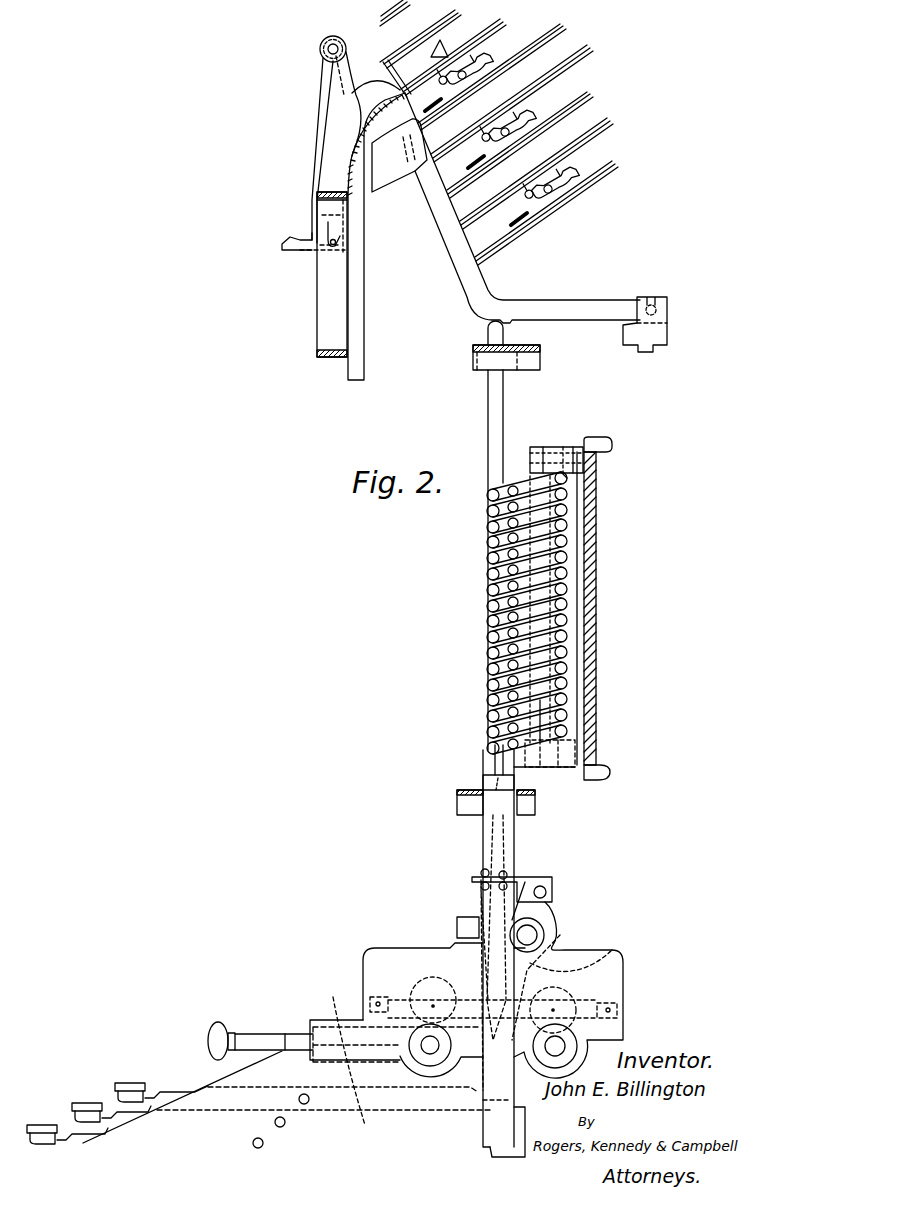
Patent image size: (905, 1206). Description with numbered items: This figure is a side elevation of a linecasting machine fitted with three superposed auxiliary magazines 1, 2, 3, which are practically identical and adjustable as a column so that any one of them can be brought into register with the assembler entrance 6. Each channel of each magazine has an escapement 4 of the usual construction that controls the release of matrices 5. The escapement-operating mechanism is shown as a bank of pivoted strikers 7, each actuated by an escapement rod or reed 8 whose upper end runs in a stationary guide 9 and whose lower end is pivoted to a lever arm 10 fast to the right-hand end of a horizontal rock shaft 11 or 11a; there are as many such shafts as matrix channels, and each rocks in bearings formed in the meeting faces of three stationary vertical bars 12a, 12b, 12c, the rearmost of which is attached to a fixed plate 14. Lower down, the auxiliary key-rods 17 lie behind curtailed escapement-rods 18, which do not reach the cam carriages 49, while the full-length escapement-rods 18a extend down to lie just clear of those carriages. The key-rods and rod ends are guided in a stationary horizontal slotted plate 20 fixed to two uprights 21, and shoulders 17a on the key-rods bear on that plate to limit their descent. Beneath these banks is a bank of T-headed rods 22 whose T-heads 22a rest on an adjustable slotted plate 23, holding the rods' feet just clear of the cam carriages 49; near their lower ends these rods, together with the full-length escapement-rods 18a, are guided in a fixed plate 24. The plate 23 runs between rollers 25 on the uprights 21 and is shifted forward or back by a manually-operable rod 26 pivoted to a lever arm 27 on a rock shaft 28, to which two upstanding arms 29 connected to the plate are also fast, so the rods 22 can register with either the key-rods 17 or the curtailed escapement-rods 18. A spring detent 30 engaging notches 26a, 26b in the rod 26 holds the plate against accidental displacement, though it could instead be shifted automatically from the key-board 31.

The auxiliary magazine 1 is at (475, 20).
The auxiliary magazine 2 is at (483, 74).
The auxiliary magazine 3 is at (512, 121).
The escapement 4 is at (470, 80).
The matrices 5 is at (413, 65).
The assembler entrance 6 is at (330, 142).
The pivoted strikers 7 is at (447, 235).
The escapement rod or reed 8 is at (492, 395).
The stationary guide 9 is at (477, 348).
The lever arm 10 is at (486, 526).
The horizontal rock shaft 11 is at (531, 466).
The horizontal rock shaft 11a is at (562, 480).
The stationary vertical bar 12a is at (536, 447).
The stationary vertical bar 12b is at (556, 447).
The stationary vertical bar 12c is at (574, 447).
The fixed plate 14 is at (597, 508).
The auxiliary key-rods 17 is at (514, 767).
The shoulders 17a is at (532, 795).
The curtailed escapement-rods 18 is at (484, 758).
The full-length escapement-rods 18a is at (478, 906).
The stationary horizontal slotted plate 20 is at (459, 794).
The uprights 21 is at (483, 780).
The T-headed rods 22 is at (480, 895).
The T-heads 22a is at (516, 876).
The adjustable slotted plate 23 is at (481, 880).
The fixed plate 24 is at (600, 960).
The rollers 25 is at (503, 872).
The manually-operable rod 26 is at (250, 1036).
The notch 26a is at (290, 1036).
The notch 26b is at (363, 1120).
The lever arm 27 is at (556, 952).
The rock shaft 28 is at (545, 926).
The upstanding arms 29 is at (548, 896).
The spring detent 30 is at (355, 1053).
The key-board 31 is at (168, 1099).
The cam carriages 49 is at (380, 1000).